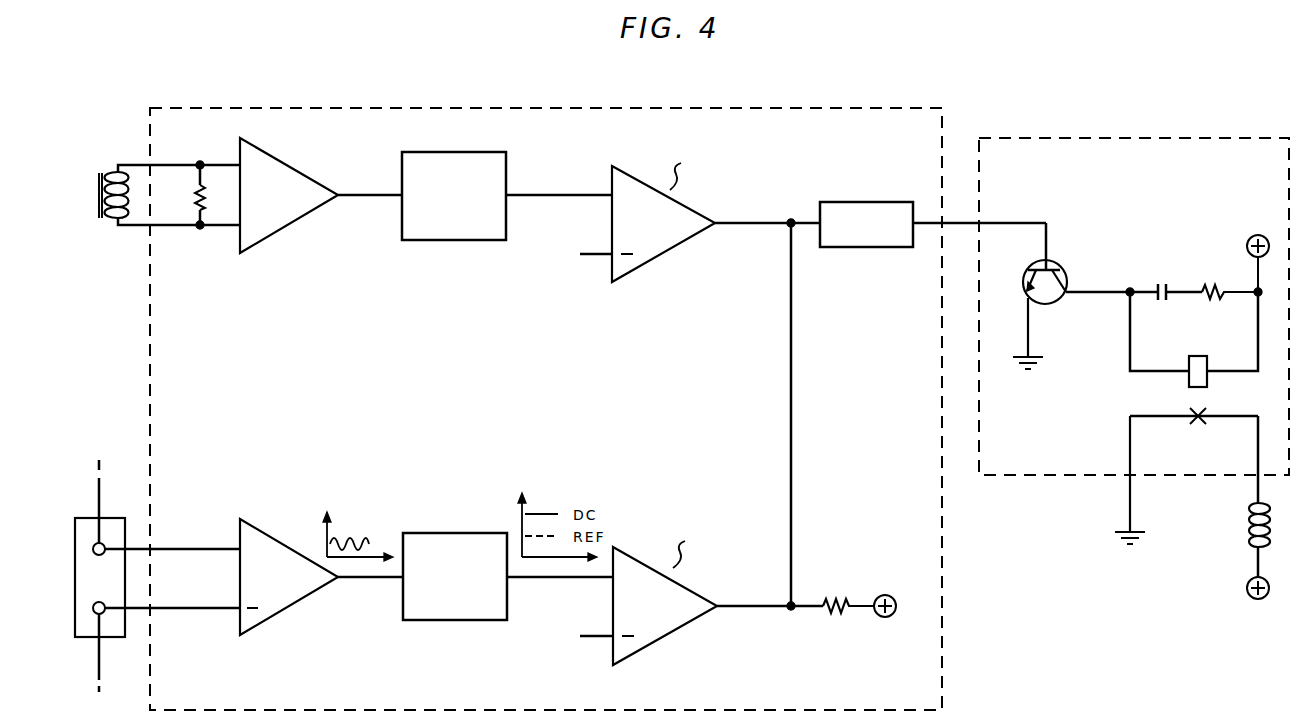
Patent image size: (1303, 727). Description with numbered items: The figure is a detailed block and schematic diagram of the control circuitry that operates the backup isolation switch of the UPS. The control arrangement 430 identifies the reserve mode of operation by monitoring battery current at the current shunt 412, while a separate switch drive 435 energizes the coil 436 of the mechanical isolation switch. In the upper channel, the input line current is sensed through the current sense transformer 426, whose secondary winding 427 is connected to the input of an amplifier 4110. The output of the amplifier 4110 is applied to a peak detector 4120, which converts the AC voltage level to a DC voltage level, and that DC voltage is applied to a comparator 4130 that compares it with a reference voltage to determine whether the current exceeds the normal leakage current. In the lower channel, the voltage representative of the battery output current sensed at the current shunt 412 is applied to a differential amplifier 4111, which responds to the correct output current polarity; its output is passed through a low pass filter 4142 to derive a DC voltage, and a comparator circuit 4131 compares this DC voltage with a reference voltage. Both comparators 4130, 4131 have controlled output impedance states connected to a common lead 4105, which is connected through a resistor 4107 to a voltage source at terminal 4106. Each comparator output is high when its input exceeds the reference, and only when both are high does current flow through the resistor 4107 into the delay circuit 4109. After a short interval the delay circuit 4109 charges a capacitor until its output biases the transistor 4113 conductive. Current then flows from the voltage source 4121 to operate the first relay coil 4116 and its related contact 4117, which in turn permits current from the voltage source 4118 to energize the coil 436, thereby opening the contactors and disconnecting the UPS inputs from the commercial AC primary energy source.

The control arrangement 430 is at (245, 108).
The switch drive 435 is at (1030, 138).
The current sense transformer 426 is at (165, 181).
The secondary winding 427 is at (126, 210).
The amplifier 4110 is at (291, 178).
The peak detector 4120 is at (458, 152).
The comparator 4130 is at (676, 250).
The delay circuit 4109 is at (864, 202).
The lead 4105 is at (793, 358).
The transistor 4113 is at (1066, 266).
The voltage source 4121 is at (1248, 246).
The first relay coil 4116 is at (1194, 339).
The contact 4117 is at (1186, 476).
The coil 436 is at (1254, 529).
The voltage source 4118 is at (1247, 589).
The current shunt 412 is at (114, 518).
The differential amplifier 4111 is at (293, 605).
The low pass filter 4142 is at (455, 533).
The comparator circuit 4131 is at (663, 641).
The resistor 4107 is at (846, 593).
The terminal 4106 is at (885, 617).